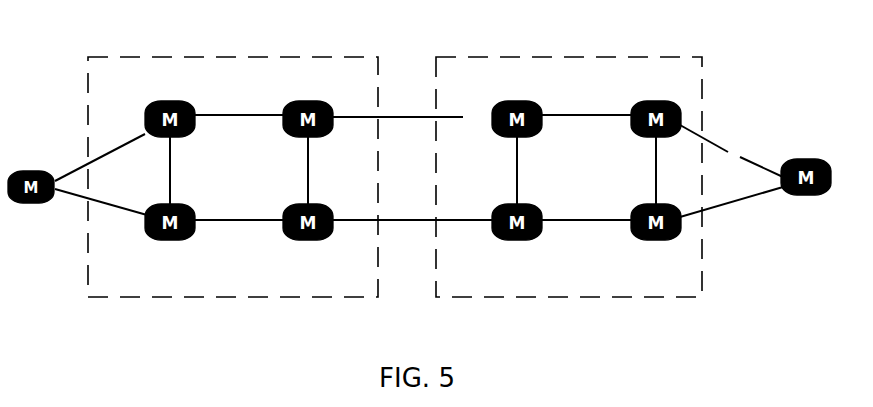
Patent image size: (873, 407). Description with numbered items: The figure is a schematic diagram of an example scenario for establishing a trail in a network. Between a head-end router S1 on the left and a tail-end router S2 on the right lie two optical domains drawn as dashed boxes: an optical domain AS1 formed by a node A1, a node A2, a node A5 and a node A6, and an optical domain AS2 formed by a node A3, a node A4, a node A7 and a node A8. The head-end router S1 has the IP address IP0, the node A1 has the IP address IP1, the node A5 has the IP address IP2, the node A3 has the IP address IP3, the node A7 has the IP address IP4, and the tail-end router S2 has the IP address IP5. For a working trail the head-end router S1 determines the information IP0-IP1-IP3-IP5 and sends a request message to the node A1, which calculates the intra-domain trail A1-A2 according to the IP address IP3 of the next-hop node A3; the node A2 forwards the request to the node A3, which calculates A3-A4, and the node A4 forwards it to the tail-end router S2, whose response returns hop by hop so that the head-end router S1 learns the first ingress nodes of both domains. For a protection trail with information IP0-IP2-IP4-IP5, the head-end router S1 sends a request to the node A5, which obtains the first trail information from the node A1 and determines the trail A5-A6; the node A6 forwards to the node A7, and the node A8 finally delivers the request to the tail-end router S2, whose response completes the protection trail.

The optical domain AS1 is at (233, 159).
The optical domain AS2 is at (569, 159).
The head-end router S1 is at (31, 169).
The tail-end router S2 is at (806, 159).
The node A1 is at (170, 102).
The node A2 is at (308, 102).
The node A3 is at (517, 104).
The node A4 is at (656, 99).
The node A5 is at (170, 238).
The node A6 is at (308, 242).
The node A7 is at (517, 240).
The node A8 is at (656, 240).
The IP address IP0 is at (25, 233).
The IP address IP1 is at (100, 145).
The IP address IP2 is at (101, 197).
The IP address IP3 is at (405, 101).
The IP address IP4 is at (412, 206).
The IP address IP5 is at (731, 171).